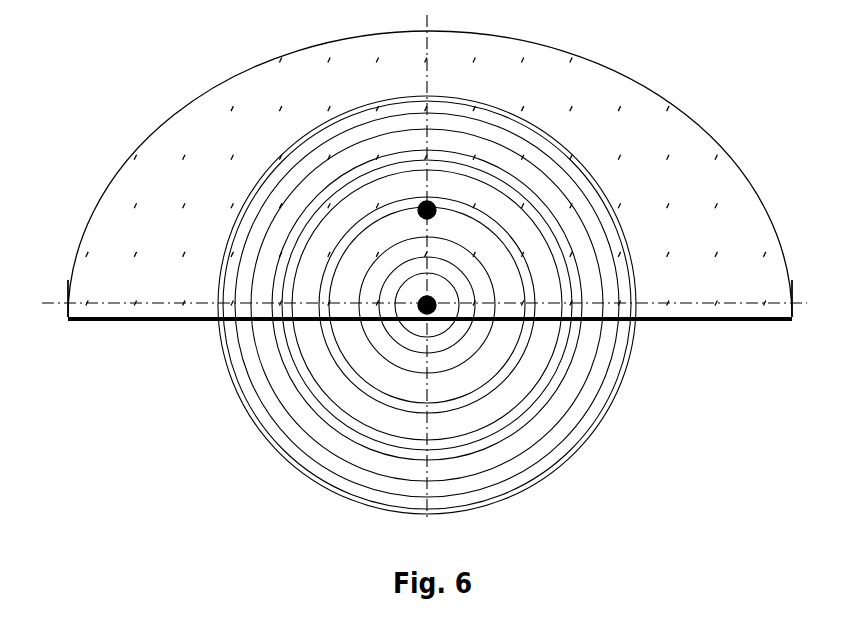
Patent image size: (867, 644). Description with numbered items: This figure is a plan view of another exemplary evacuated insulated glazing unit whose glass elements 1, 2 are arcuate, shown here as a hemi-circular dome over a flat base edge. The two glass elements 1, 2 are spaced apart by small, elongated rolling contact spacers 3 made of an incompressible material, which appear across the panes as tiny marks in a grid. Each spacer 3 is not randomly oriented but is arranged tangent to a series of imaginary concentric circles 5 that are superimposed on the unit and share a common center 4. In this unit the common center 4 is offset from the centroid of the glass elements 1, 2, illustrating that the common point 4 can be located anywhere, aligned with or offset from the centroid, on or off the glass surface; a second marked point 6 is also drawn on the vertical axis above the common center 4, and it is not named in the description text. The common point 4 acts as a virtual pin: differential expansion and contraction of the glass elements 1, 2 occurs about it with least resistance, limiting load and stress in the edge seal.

The glass element 1 is at (75, 318).
The glass element 2 is at (75, 318).
The rolling contact spacer 3 is at (183, 300).
The common center 4 is at (433, 312).
The imaginary concentric circles 5 is at (630, 348).
The focal point 6 is at (420, 218).